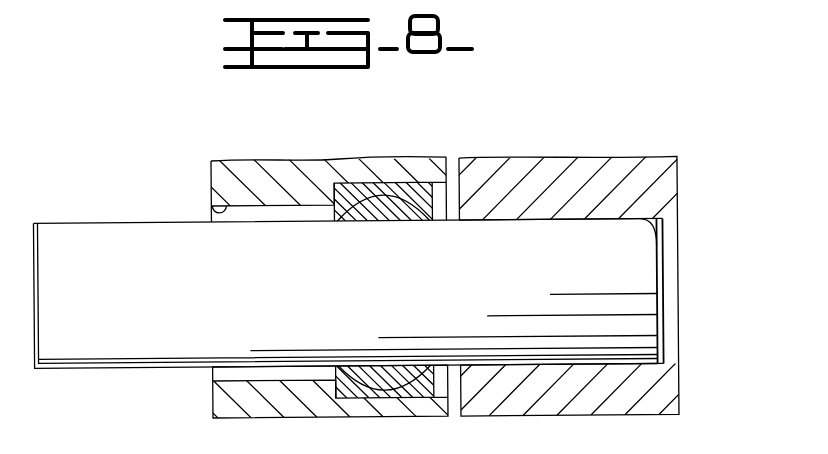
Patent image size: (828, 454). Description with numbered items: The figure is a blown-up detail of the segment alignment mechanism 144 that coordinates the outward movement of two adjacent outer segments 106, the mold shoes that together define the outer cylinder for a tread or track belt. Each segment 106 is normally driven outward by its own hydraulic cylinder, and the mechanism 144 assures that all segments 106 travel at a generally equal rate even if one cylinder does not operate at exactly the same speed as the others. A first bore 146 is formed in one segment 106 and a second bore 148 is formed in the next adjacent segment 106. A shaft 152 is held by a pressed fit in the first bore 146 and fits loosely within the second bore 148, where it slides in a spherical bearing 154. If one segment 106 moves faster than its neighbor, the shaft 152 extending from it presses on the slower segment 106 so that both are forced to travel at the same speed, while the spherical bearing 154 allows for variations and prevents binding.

The outer segment 106 is at (247, 177).
The segment alignment mechanism 144 is at (385, 247).
The first bore 146 is at (657, 245).
The second bore 148 is at (212, 214).
The shaft 152 is at (385, 289).
The spherical bearing 154 is at (386, 182).